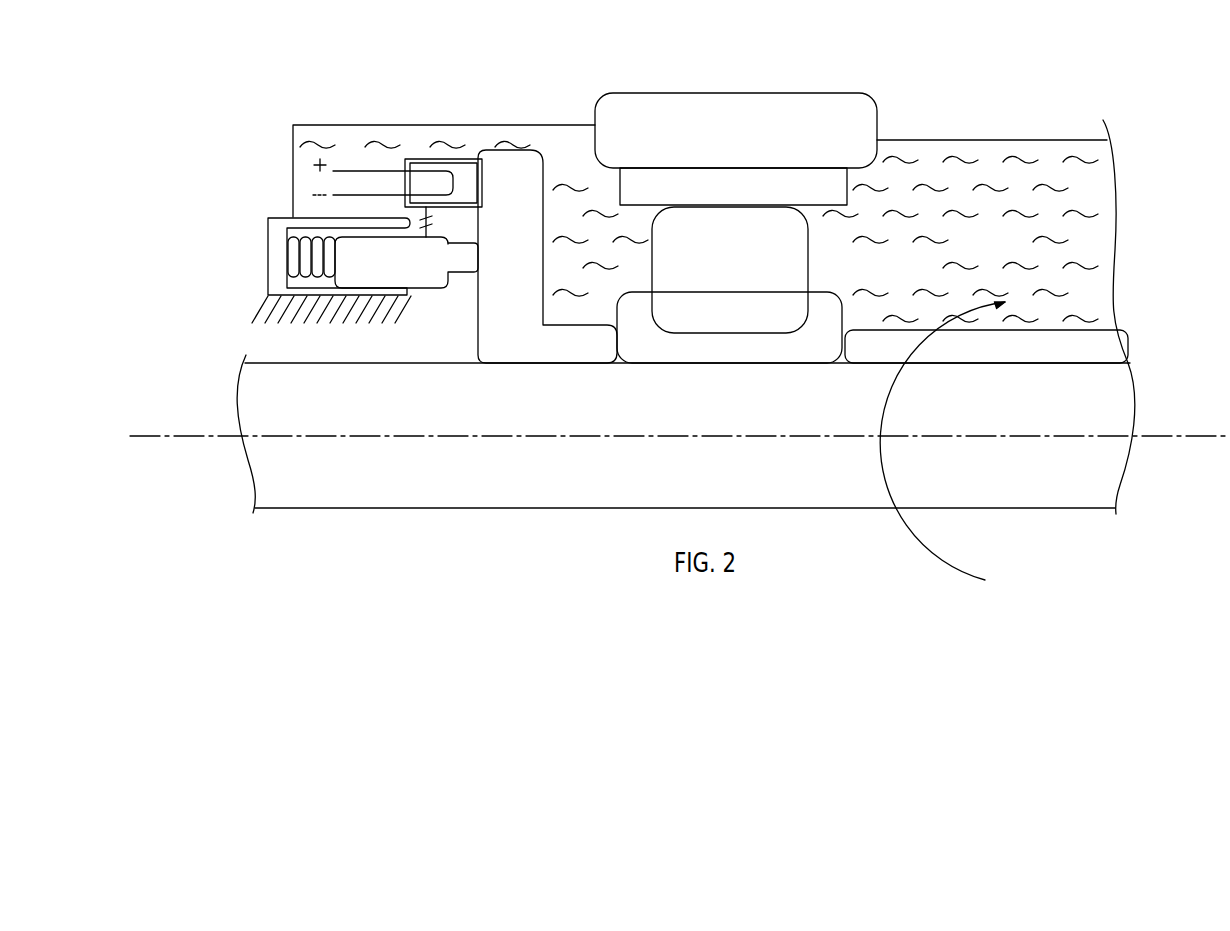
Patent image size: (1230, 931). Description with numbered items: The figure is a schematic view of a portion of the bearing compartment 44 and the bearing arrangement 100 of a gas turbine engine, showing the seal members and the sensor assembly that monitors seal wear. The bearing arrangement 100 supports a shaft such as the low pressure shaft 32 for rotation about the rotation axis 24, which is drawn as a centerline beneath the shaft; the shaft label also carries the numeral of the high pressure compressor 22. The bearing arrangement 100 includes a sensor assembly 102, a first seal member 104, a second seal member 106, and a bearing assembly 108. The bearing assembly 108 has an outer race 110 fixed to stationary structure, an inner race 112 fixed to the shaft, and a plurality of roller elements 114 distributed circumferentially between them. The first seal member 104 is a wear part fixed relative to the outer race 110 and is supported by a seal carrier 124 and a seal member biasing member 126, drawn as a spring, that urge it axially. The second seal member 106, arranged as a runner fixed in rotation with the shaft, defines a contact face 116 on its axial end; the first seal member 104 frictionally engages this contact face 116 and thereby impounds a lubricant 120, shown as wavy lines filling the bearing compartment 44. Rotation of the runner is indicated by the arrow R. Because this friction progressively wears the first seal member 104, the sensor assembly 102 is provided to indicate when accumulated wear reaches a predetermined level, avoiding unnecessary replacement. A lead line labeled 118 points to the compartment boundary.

The bearing arrangement 100 is at (318, 612).
The sensor assembly 102 is at (464, 158).
The first seal member 104 is at (421, 278).
The second seal member 106 is at (511, 348).
The bearing assembly 108 is at (845, 231).
The outer race 110 is at (737, 182).
The inner race 112 is at (802, 348).
The roller elements 114 is at (809, 266).
The contact face 116 is at (522, 357).
The housing wall 118 is at (1030, 140).
The lubricant 120 is at (742, 231).
The seal carrier 124 is at (271, 258).
The seal member biasing member 126 is at (298, 242).
The bearing compartment 44 is at (997, 251).
The rotation axis 24 is at (1197, 441).
The low pressure shaft 32 is at (686, 446).
The high pressure compressor 22 is at (1080, 489).
The rotation direction R is at (932, 558).